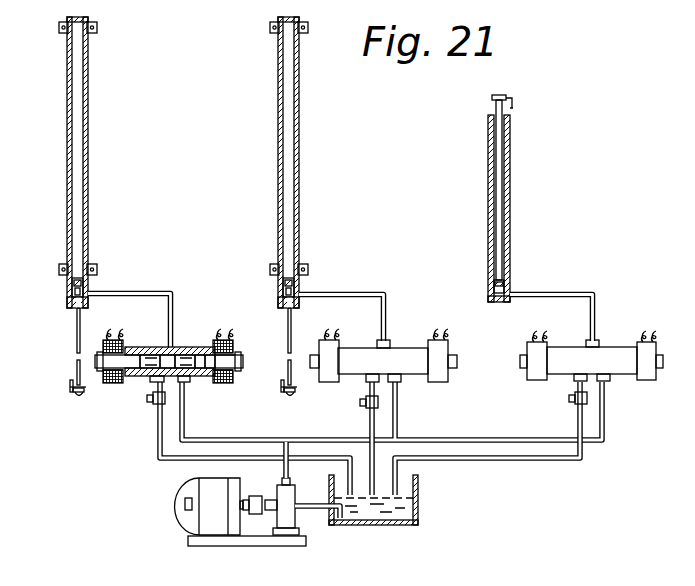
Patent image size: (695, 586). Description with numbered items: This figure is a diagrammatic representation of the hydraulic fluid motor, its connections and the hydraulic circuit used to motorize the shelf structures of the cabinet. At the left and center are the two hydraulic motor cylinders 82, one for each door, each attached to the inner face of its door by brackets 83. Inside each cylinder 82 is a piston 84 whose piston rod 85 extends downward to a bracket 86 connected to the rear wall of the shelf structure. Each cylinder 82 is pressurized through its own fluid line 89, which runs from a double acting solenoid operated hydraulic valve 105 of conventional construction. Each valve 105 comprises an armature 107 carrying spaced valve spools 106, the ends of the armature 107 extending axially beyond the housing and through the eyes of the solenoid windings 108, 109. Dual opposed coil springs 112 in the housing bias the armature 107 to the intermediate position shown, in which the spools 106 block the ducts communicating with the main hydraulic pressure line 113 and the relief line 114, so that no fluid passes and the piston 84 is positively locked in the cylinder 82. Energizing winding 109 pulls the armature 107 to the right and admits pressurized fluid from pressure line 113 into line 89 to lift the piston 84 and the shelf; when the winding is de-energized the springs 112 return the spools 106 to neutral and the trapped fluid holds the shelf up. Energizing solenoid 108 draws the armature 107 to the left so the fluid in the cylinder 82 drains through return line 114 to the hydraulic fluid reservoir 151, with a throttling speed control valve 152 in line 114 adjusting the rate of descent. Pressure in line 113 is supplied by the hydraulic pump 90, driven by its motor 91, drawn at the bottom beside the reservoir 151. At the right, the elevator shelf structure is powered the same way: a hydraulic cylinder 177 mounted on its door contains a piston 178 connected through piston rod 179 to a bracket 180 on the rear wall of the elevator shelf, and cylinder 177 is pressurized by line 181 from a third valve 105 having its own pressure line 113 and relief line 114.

The hydraulic motor cylinder 82 is at (67, 246).
The brackets 83 is at (59, 268).
The piston 84 is at (72, 283).
The piston rod 85 is at (77, 326).
The bracket 86 is at (70, 390).
The fluid line 89 is at (136, 296).
The hydraulic pump 90 is at (290, 520).
The motor 91 is at (210, 517).
The solenoid operated hydraulic valve 105 is at (175, 346).
The valve spools 106 is at (152, 371).
The armature 107 is at (113, 380).
The solenoid winding 108 is at (114, 341).
The solenoid winding 109 is at (234, 352).
The coil springs 112 is at (135, 357).
The main hydraulic pressure line 113 is at (185, 417).
The relief line 114 is at (166, 462).
The hydraulic fluid reservoir 151 is at (418, 485).
The throttling speed control valve 152 is at (154, 404).
The hydraulic cylinder 177 is at (488, 207).
The piston 178 is at (505, 288).
The piston rod 179 is at (498, 162).
The bracket 180 is at (513, 107).
The line 181 is at (583, 292).